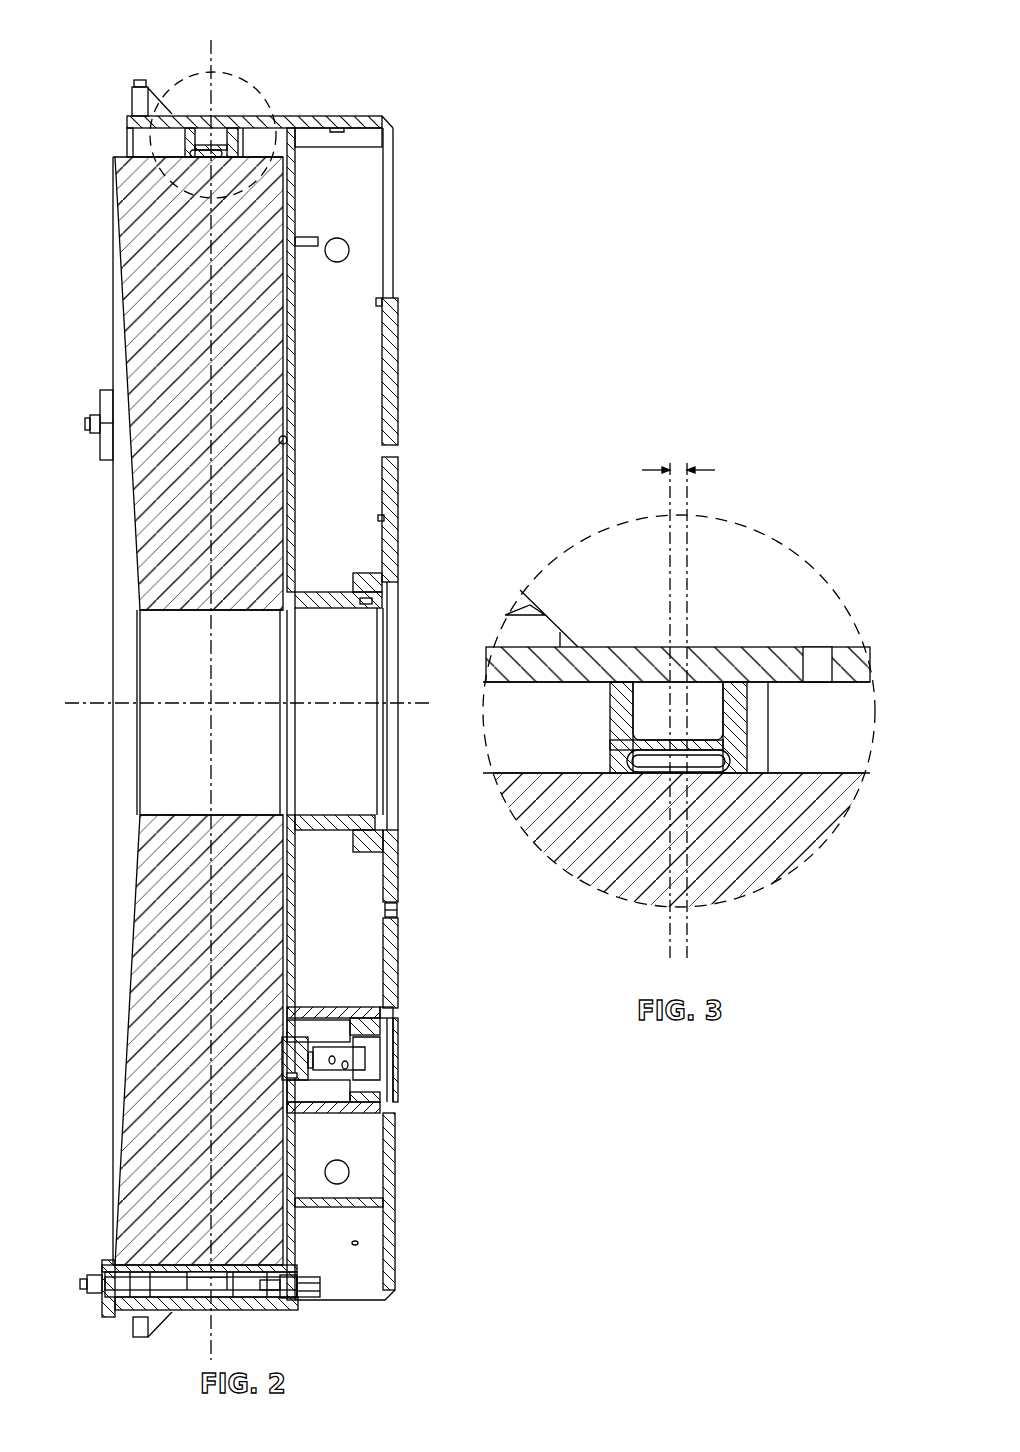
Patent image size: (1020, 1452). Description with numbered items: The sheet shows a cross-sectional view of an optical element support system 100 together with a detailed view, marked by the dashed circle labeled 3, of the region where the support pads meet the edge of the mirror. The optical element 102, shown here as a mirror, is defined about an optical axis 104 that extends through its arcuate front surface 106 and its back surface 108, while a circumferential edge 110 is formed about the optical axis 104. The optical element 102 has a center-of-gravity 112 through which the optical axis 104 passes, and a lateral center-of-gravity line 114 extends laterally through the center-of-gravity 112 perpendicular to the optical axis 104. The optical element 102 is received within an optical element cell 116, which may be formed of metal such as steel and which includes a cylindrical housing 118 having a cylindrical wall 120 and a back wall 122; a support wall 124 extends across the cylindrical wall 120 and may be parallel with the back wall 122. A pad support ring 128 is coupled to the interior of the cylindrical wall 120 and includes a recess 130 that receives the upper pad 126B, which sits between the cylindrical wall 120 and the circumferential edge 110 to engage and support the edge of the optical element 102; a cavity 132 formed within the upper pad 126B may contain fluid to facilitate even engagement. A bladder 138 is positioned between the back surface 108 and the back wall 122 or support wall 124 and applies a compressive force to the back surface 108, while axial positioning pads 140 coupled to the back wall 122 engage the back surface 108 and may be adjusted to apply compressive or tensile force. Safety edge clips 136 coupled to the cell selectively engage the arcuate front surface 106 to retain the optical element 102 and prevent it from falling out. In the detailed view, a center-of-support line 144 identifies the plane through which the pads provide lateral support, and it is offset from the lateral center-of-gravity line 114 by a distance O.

In FIG. 2, the optical element support system 100 is at (95, 51).
In FIG. 2, the optical element 102 is at (147, 983).
In FIG. 3, the optical element 102 is at (603, 882).
In FIG. 2, the optical axis 104 is at (90, 705).
In FIG. 2, the arcuate front surface 106 is at (137, 907).
In FIG. 2, the back surface 108 is at (297, 448).
In FIG. 2, the circumferential edge 110 is at (257, 152).
In FIG. 3, the circumferential edge 110 is at (783, 770).
In FIG. 2, the center-of-gravity 112 is at (207, 699).
In FIG. 2, the lateral center-of-gravity line 114 is at (210, 737).
In FIG. 3, the lateral center-of-gravity line 114 is at (670, 510).
In FIG. 2, the optical element cell 116 is at (383, 120).
In FIG. 2, the cylindrical housing 118 is at (337, 1270).
In FIG. 2, the cylindrical wall 120 is at (334, 128).
In FIG. 3, the cylindrical wall 120 is at (500, 660).
In FIG. 2, the back wall 122 is at (390, 917).
In FIG. 2, the support wall 124 is at (287, 900).
In FIG. 2, the upper pad 126B is at (217, 152).
In FIG. 3, the upper pad 126B is at (740, 757).
In FIG. 2, the pad support ring 128 is at (187, 145).
In FIG. 3, the pad support ring 128 is at (612, 697).
In FIG. 3, the recess 130 is at (622, 757).
In FIG. 3, the cavity 132 is at (747, 727).
In FIG. 2, the safety edge clip 136 is at (100, 1310).
In FIG. 2, the bladder 138 is at (293, 385).
In FIG. 2, the axial positioning pad 140 is at (313, 1048).
In FIG. 3, the center-of-support line 144 is at (687, 510).
In FIG. 2, the detail view 3 is at (206, 70).
In FIG. 3, the distance O is at (698, 468).